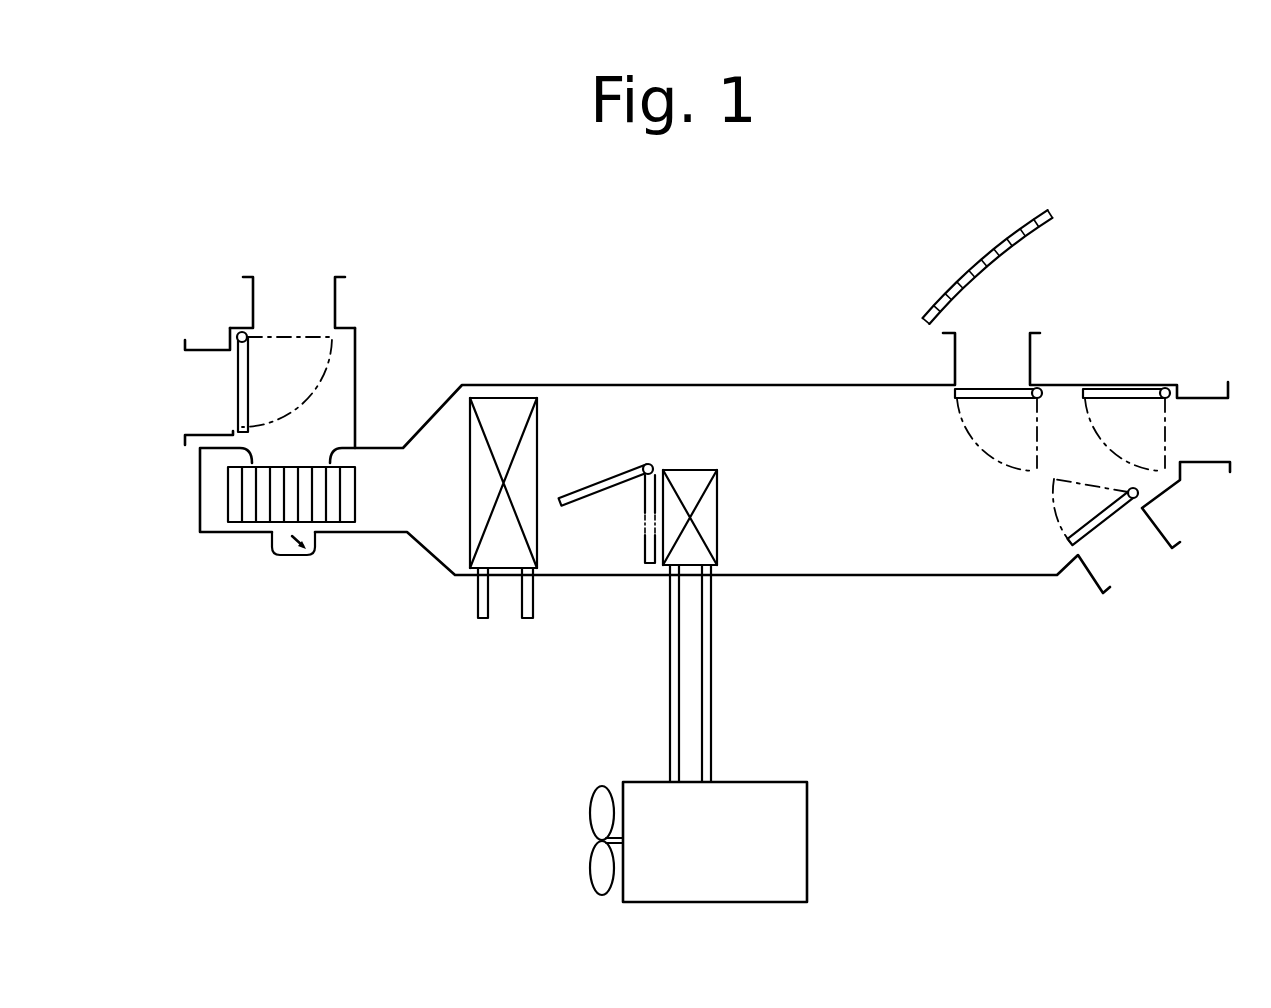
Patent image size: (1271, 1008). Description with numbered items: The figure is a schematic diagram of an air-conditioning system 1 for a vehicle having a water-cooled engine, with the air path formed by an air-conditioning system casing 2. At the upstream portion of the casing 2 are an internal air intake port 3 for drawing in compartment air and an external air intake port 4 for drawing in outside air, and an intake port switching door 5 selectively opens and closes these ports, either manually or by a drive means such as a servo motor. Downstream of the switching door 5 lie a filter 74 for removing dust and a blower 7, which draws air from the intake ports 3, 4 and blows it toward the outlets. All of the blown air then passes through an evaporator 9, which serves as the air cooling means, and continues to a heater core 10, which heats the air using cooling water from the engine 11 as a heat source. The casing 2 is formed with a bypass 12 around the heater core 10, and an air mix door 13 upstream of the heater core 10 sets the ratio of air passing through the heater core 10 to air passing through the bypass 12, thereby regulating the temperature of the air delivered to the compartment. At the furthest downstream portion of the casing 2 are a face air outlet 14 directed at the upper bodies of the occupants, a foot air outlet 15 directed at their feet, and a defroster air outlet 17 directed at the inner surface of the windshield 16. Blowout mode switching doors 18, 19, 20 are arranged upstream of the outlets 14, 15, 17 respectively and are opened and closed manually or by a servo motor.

The air-conditioning system 1 is at (657, 325).
The air-conditioning system casing 2 is at (580, 385).
The internal air intake port 3 is at (200, 373).
The external air intake port 4 is at (292, 290).
The intake port switching door 5 is at (237, 399).
The blower 7 is at (310, 553).
The filter 74 is at (195, 490).
The evaporator 9 is at (500, 412).
The heater core 10 is at (718, 523).
The engine 11 is at (808, 838).
The bypass 12 is at (713, 407).
The air mix door 13 is at (588, 504).
The face air outlet 14 is at (1202, 437).
The foot air outlet 15 is at (1128, 555).
The windshield 16 is at (960, 280).
The defroster air outlet 17 is at (997, 352).
The blowout mode switching door 18 is at (1130, 382).
The blowout mode switching door 19 is at (1097, 535).
The blowout mode switching door 20 is at (1012, 387).